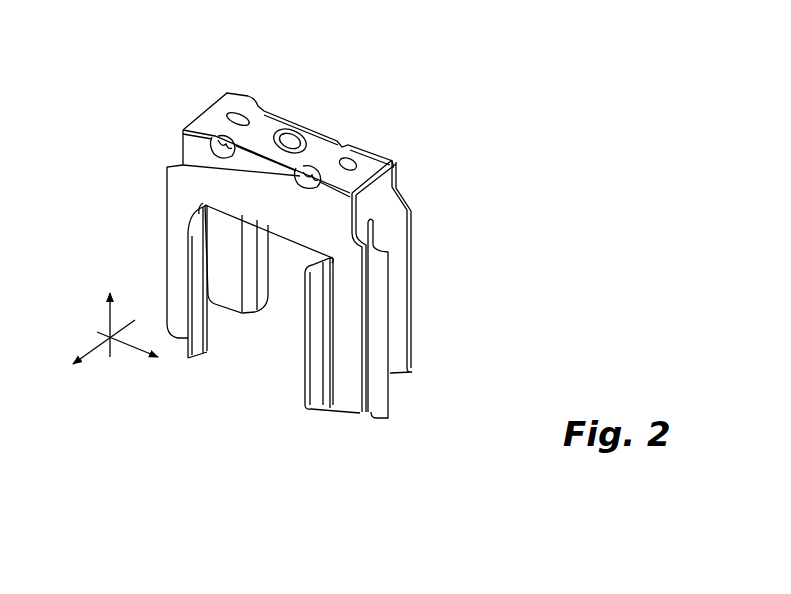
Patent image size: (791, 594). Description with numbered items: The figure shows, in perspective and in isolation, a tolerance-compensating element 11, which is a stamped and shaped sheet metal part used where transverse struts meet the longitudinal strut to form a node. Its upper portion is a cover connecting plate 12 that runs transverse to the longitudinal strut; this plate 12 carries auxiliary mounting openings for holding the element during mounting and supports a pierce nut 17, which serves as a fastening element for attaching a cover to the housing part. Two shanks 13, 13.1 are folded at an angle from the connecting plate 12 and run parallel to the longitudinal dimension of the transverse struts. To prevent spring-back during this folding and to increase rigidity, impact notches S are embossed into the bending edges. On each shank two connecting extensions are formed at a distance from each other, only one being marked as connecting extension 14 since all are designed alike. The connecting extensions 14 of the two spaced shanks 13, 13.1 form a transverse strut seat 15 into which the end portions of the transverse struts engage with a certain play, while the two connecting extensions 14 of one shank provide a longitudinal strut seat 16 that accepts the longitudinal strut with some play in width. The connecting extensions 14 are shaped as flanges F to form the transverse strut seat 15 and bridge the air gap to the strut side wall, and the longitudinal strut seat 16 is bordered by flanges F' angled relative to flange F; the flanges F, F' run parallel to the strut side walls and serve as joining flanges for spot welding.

The tolerance-compensating element 11 is at (146, 138).
The connecting plate 12 is at (323, 150).
The shank 13 is at (275, 203).
The shank 13.1 is at (400, 175).
The connecting extension 14 is at (392, 318).
The transverse strut seat 15 is at (402, 276).
The longitudinal strut seat 16 is at (242, 325).
The pierce nut 17 is at (283, 130).
The impact notches S is at (212, 147).
The flange F is at (332, 335).
The flange F' is at (291, 422).